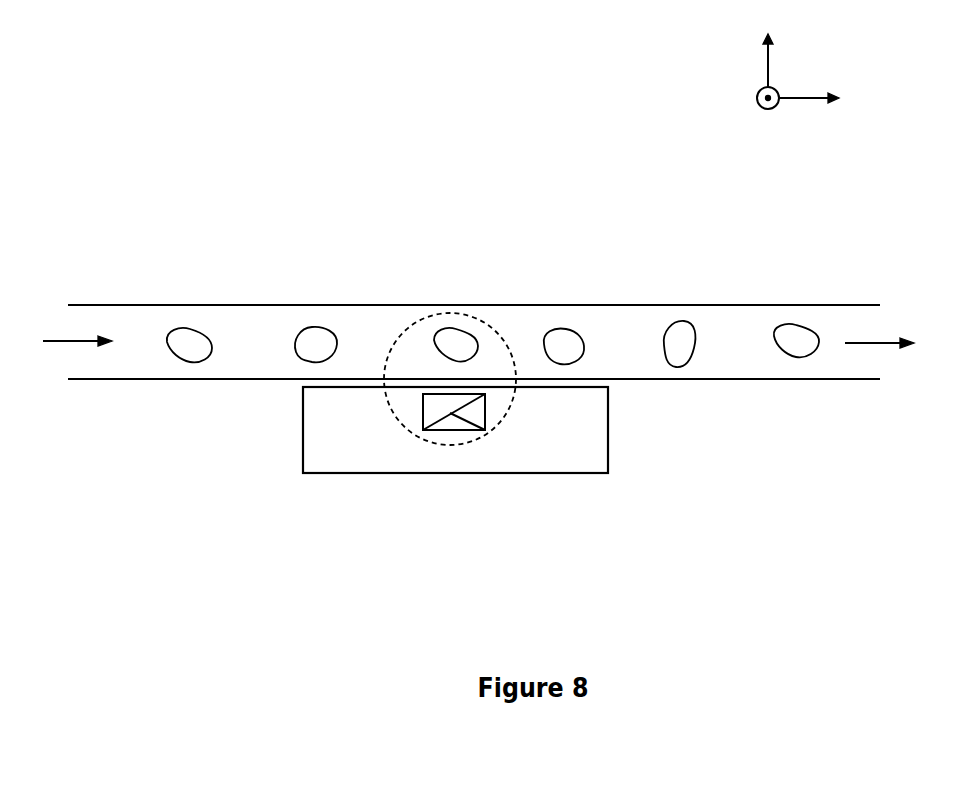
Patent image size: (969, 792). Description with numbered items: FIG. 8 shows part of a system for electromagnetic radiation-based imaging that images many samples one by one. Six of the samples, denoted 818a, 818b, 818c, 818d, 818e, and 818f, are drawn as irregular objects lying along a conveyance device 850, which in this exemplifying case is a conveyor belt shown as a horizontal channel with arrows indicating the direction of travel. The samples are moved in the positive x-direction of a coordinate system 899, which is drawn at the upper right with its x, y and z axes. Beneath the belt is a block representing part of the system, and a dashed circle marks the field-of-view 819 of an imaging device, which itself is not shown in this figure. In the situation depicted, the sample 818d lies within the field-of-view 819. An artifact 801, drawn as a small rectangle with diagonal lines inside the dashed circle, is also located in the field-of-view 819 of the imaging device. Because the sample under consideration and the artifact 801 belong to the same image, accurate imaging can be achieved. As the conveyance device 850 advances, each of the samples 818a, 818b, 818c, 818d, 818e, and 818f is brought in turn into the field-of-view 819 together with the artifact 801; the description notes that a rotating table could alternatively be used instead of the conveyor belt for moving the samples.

The conveyance device 850 is at (263, 332).
The sample 818a is at (793, 333).
The sample 818b is at (675, 340).
The sample 818c is at (565, 342).
The sample 818d is at (458, 342).
The sample 818e is at (317, 342).
The sample 818f is at (183, 340).
The artifact 801 is at (448, 430).
The field-of-view 819 is at (503, 417).
The coordinate system 899 is at (826, 75).